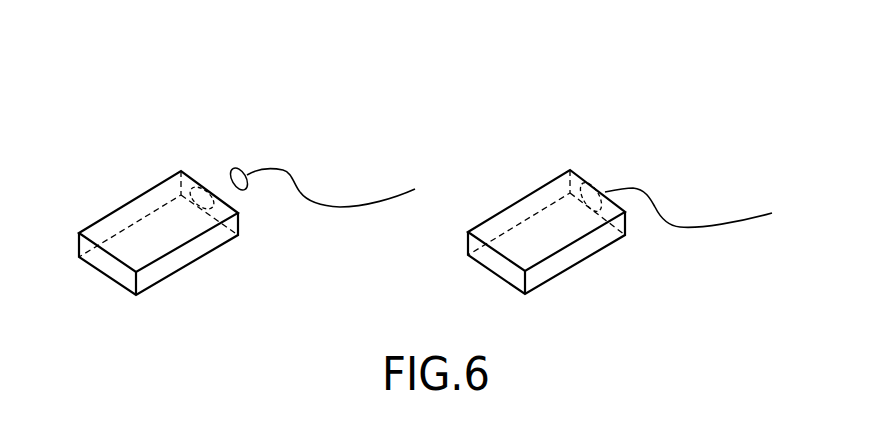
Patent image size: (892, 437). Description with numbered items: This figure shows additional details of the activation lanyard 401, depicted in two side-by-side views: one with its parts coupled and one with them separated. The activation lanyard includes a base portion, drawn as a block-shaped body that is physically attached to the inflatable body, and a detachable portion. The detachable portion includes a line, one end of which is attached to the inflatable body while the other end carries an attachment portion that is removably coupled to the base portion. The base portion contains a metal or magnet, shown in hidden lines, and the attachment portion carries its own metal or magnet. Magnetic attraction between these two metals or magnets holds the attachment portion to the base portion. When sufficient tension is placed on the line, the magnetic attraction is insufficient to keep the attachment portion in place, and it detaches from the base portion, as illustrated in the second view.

The activation lanyard 401 is at (455, 48).